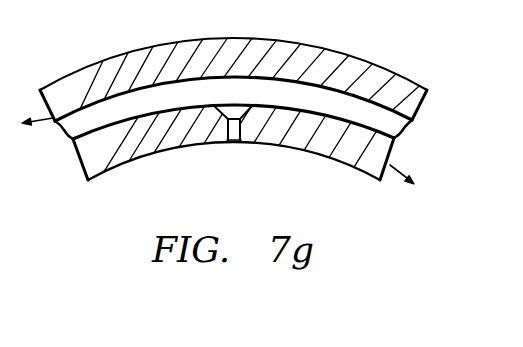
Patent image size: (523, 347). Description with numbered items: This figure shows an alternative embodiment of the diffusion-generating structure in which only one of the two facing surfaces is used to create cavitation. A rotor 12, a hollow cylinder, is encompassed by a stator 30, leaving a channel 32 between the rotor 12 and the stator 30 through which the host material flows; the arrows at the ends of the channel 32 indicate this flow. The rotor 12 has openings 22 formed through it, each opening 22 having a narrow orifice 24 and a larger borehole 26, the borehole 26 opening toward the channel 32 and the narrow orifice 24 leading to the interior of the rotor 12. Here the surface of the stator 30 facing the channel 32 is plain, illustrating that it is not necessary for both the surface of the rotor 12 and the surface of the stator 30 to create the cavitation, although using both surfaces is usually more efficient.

The rotor 12 is at (110, 162).
The openings 22 is at (230, 146).
The narrow orifice 24 is at (238, 146).
The borehole 26 is at (232, 104).
The stator 30 is at (283, 50).
The channel 32 is at (68, 137).